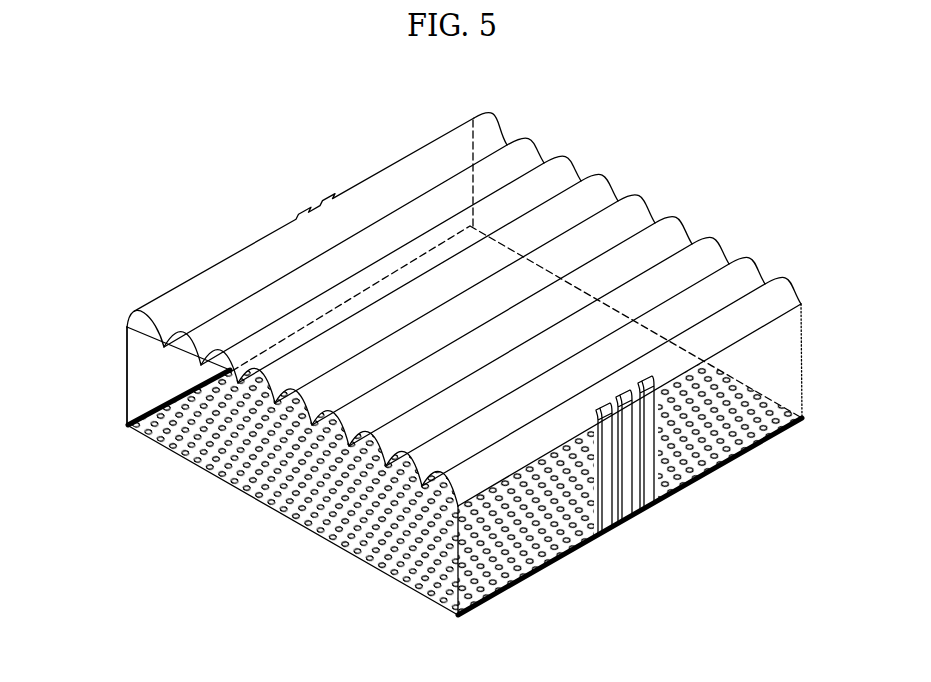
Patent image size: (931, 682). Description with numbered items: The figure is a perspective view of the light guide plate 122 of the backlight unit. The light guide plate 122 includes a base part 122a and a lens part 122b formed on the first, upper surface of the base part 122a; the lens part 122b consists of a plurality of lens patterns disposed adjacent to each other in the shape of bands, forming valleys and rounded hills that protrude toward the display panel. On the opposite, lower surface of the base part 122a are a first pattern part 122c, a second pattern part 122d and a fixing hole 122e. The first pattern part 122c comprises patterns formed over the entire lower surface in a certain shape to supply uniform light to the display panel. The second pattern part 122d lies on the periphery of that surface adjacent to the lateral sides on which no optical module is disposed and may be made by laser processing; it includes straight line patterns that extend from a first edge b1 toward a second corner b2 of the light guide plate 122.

The light guide plate 122 is at (343, 147).
The base part 122a is at (140, 385).
The lens part 122b is at (173, 307).
The first pattern part 122c is at (243, 480).
The second pattern part 122d is at (130, 427).
The fixing hole 122e is at (628, 517).
The first edge b1 is at (457, 618).
The second corner b2 is at (806, 413).